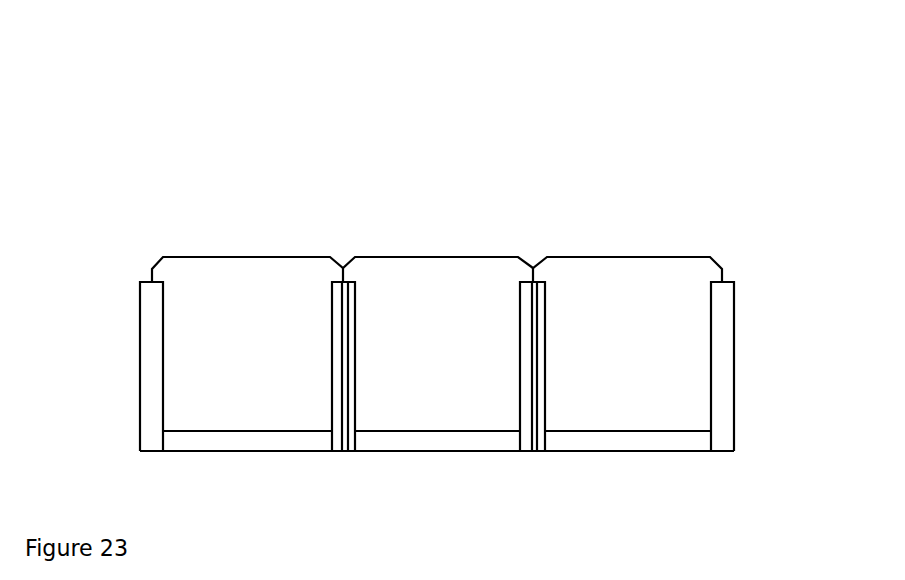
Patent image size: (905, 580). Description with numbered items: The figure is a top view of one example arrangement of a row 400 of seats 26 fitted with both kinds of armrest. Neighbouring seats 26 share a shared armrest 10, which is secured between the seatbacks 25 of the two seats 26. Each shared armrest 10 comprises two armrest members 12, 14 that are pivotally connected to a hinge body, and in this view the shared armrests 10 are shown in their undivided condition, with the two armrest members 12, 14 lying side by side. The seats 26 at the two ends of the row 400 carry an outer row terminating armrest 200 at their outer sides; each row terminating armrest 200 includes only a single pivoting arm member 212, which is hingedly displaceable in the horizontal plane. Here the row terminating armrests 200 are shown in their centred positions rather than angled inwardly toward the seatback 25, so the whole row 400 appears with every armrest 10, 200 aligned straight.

The row of seats 400 is at (199, 131).
The row terminating armrest 200 is at (143, 269).
The pivoting arm member 212 is at (147, 328).
The seat 26 is at (260, 265).
The shared armrest 10 is at (362, 265).
The armrest member 14 is at (337, 290).
The armrest member 12 is at (349, 293).
The seatback 25 is at (235, 442).